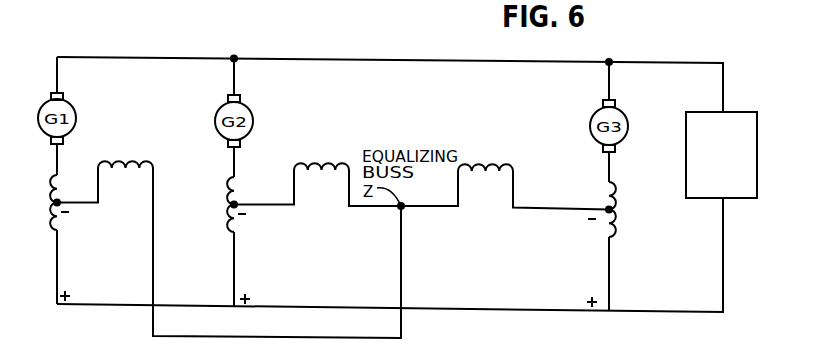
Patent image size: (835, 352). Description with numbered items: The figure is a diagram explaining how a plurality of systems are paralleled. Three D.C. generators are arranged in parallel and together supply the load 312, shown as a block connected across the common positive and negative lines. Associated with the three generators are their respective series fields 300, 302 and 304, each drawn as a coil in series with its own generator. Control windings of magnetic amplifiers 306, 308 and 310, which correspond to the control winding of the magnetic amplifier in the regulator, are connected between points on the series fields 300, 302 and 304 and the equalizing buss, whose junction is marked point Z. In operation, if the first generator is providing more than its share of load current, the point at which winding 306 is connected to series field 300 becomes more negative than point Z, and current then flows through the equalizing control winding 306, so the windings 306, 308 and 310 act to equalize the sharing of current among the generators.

The series field 300 is at (50, 218).
The series field 302 is at (240, 232).
The series field 304 is at (616, 233).
The control winding of magnetic amplifier 306 is at (107, 168).
The control winding of magnetic amplifier 308 is at (304, 170).
The control winding of magnetic amplifier 310 is at (467, 171).
The load 312 is at (702, 112).